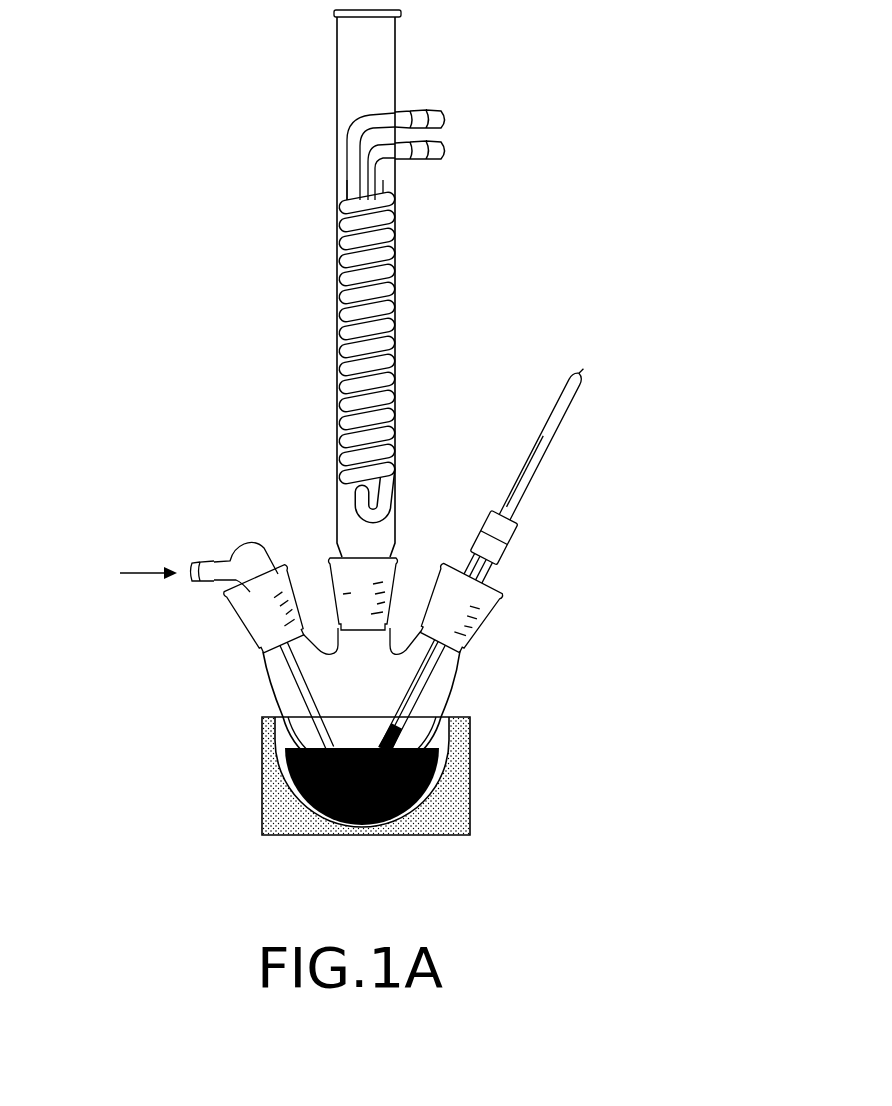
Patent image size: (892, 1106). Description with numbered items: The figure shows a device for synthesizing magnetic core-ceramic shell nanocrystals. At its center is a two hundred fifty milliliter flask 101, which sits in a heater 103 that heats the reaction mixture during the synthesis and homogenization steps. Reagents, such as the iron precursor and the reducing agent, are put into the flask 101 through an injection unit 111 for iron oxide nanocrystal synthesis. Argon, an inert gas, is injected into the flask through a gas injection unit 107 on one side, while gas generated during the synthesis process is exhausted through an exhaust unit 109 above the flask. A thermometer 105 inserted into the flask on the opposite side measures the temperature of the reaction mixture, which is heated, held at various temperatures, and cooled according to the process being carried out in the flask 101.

The flask 101 is at (432, 695).
The heater 103 is at (448, 797).
The thermometer 105 is at (550, 452).
The gas injection unit 107 is at (190, 577).
The exhaust unit 109 is at (438, 114).
The injection unit 111 is at (445, 151).